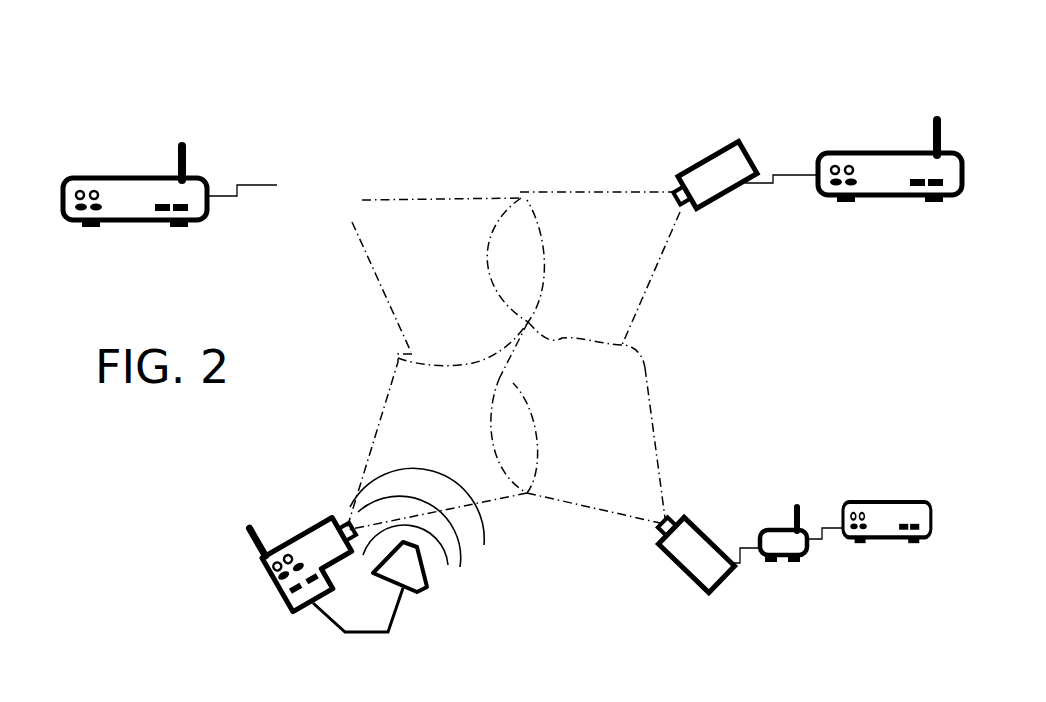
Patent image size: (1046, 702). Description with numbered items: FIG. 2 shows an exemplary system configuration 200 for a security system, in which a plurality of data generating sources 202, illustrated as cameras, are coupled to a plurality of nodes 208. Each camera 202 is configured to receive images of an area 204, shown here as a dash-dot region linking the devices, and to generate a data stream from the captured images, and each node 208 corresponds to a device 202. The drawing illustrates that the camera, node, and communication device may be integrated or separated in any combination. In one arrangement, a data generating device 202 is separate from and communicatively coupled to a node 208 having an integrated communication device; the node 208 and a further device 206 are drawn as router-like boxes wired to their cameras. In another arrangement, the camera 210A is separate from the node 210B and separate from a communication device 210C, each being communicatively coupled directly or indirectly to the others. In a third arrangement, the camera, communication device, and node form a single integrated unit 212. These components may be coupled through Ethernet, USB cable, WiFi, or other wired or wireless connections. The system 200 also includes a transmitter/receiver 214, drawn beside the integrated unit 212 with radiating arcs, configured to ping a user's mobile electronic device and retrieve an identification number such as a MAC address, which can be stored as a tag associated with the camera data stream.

The system configuration 200 is at (366, 73).
The data generating source 202 is at (715, 144).
The area 204 is at (593, 203).
The router 206 is at (781, 175).
The node 208 is at (130, 153).
The camera 210A is at (707, 520).
The node 210B is at (881, 493).
The communication device 210C is at (769, 519).
The single integrated unit 212 is at (301, 516).
The transmitter/receiver 214 is at (439, 578).